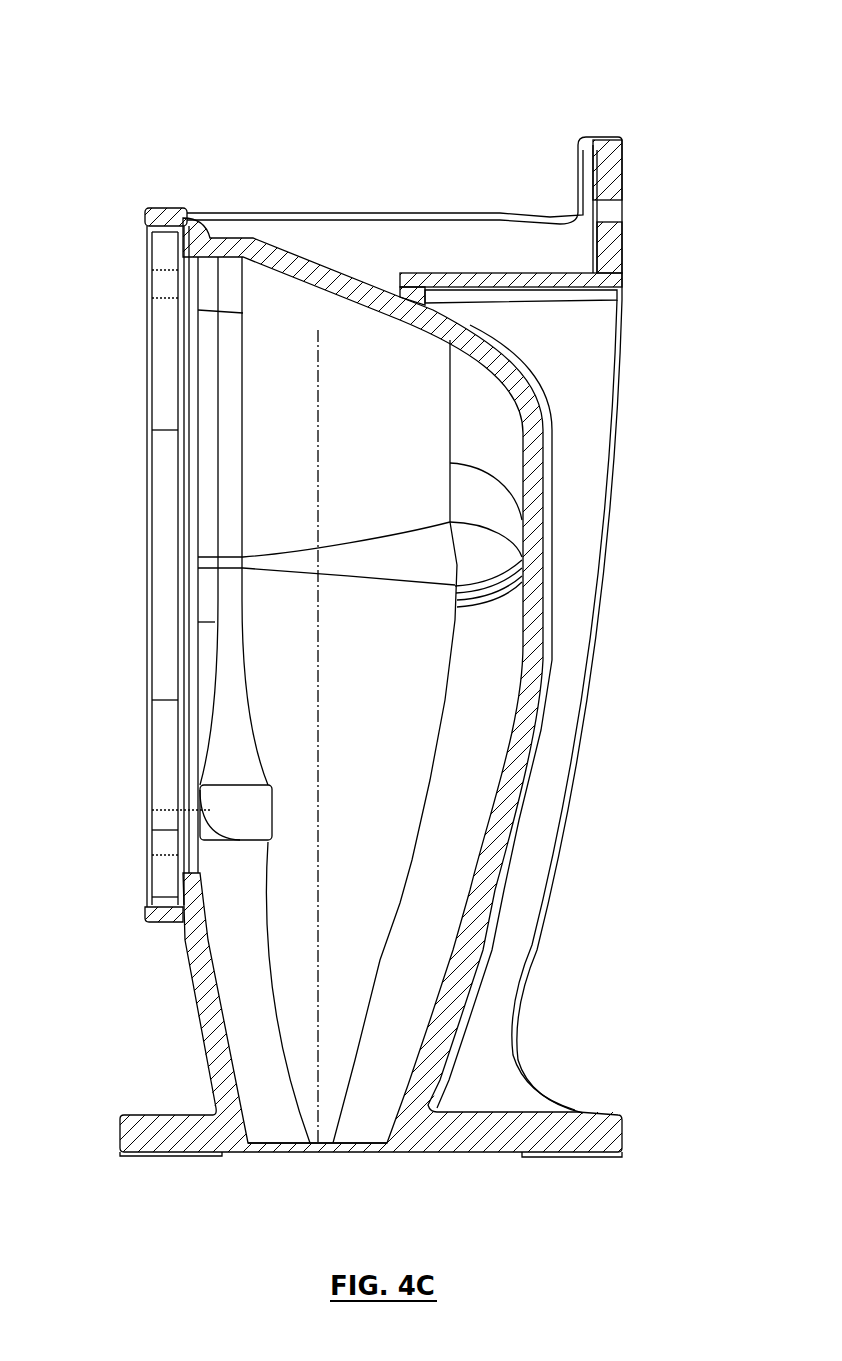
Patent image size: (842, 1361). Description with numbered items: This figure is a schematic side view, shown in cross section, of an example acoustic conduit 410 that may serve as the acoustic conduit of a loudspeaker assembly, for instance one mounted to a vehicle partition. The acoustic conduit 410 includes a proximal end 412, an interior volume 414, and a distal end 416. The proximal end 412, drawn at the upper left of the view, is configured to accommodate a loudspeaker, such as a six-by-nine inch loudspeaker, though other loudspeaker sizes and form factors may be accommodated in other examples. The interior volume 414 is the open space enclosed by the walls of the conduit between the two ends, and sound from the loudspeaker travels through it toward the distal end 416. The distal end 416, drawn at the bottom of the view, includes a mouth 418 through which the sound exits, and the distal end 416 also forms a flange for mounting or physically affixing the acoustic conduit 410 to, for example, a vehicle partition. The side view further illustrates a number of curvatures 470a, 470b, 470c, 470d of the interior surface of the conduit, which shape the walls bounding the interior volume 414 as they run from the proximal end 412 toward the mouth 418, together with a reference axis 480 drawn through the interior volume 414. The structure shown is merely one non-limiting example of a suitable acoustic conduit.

The acoustic conduit 410 is at (677, 77).
The proximal end 412 is at (143, 222).
The interior volume 414 is at (434, 717).
The distal end 416 is at (403, 1157).
The mouth 418 is at (340, 1163).
The curvature 470a is at (510, 399).
The curvature 470b is at (512, 654).
The curvature 470c is at (427, 980).
The curvature 470d is at (229, 1016).
The reference axis 480 is at (323, 371).